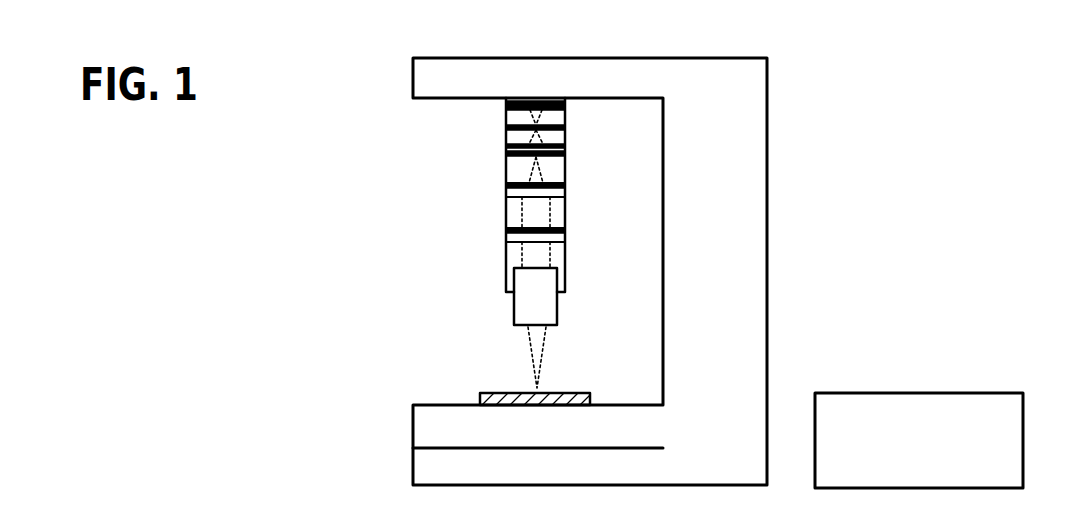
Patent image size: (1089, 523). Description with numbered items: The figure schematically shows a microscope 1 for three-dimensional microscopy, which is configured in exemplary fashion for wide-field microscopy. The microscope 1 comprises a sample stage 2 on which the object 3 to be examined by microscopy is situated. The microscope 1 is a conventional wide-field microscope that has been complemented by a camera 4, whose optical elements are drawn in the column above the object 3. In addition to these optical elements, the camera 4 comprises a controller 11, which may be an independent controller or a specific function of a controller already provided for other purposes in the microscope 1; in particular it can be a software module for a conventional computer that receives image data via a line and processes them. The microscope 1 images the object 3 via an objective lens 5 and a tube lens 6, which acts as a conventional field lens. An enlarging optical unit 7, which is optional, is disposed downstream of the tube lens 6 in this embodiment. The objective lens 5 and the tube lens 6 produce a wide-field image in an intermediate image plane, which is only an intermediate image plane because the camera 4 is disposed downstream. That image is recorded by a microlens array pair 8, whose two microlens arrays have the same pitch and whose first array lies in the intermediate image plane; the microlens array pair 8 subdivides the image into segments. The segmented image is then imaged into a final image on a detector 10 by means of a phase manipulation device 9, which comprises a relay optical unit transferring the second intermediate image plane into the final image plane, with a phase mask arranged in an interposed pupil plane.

The microscope 1 is at (850, 290).
The sample stage 2 is at (415, 420).
The object 3 is at (553, 396).
The camera 4 is at (412, 102).
The objective lens 5 is at (522, 308).
The tube lens 6 is at (504, 237).
The enlarging optical unit 7 is at (567, 187).
The microlens array pair 8 is at (507, 152).
The phase manipulation device 9 is at (565, 127).
The detector 10 is at (507, 108).
The controller 11 is at (933, 413).